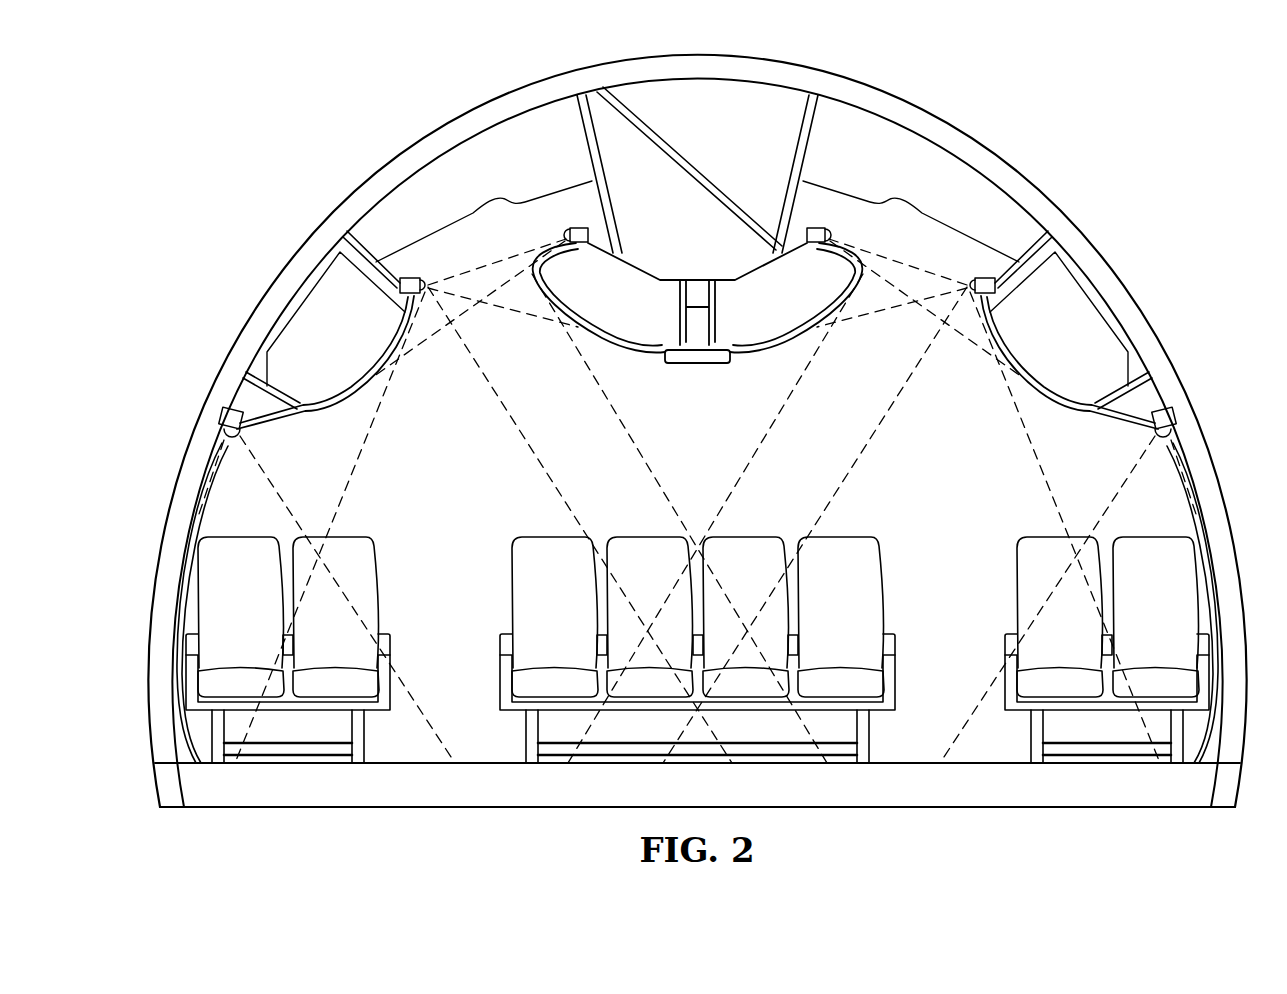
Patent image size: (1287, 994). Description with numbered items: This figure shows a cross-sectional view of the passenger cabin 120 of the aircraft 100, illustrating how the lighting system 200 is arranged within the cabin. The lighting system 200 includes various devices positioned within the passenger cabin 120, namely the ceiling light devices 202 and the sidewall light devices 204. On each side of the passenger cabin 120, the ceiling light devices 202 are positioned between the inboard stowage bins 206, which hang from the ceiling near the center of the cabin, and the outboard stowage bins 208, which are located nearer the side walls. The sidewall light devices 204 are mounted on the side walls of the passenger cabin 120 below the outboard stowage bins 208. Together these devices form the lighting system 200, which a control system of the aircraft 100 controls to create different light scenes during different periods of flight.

The aircraft 100 is at (352, 72).
The passenger cabin 120 is at (1112, 132).
The lighting system 200 is at (909, 219).
The ceiling light devices 202 is at (583, 228).
The sidewall light devices 204 is at (224, 410).
The inboard stowage bins 206 is at (589, 328).
The outboard stowage bins 208 is at (352, 383).